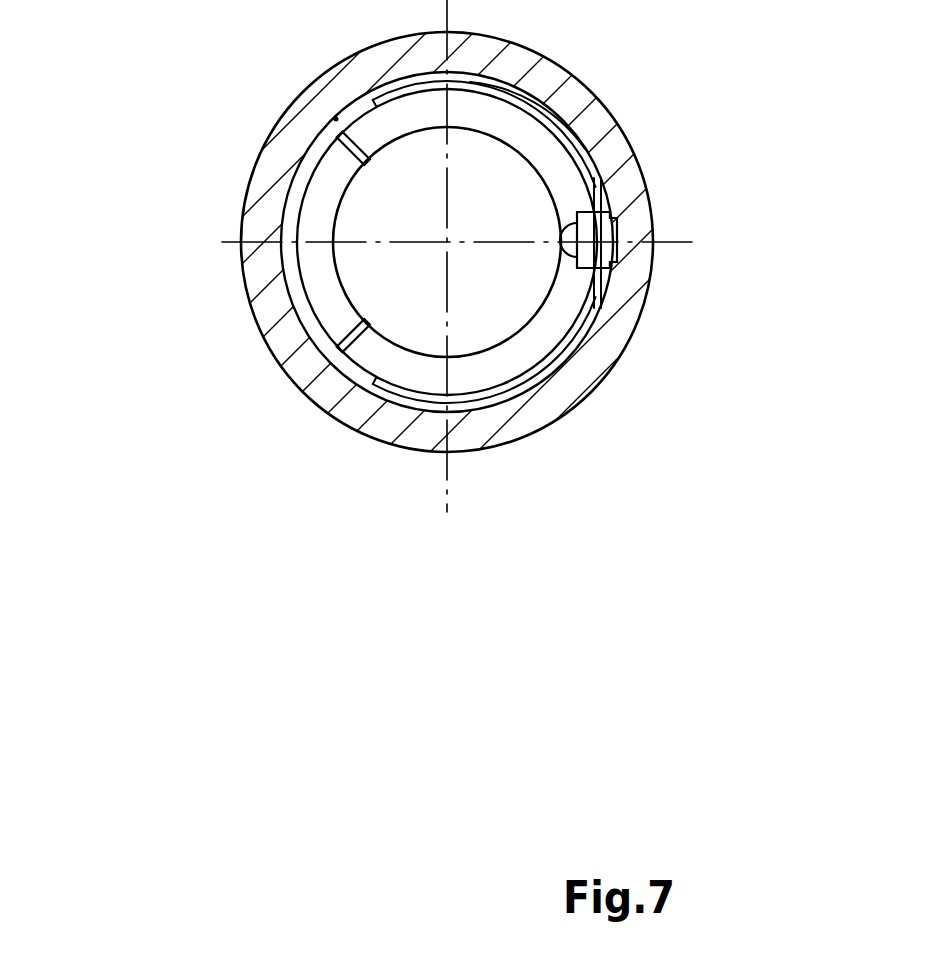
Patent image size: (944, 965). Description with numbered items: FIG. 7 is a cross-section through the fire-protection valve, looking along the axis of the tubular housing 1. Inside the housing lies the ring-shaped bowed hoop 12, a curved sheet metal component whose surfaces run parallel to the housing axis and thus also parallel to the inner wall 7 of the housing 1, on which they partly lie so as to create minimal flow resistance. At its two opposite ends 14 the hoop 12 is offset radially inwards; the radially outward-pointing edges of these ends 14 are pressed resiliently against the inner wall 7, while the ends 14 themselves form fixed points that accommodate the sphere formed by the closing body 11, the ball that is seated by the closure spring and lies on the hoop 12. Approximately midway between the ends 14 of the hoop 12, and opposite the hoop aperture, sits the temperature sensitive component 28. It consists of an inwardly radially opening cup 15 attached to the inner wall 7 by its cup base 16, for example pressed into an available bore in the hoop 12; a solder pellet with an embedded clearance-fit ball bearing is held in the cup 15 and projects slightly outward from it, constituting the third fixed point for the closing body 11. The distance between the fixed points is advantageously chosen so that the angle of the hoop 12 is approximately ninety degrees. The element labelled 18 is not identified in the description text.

The tubular housing 1 is at (252, 223).
The inner wall 7 is at (312, 326).
The closure body 11 is at (533, 198).
The hoop 12 is at (588, 147).
The offset ends of the hoop 14 is at (333, 122).
The cup 15 is at (586, 282).
The cup base 16 is at (612, 242).
The dome head 18 is at (568, 255).
The temperature sensitive component 28 is at (640, 222).